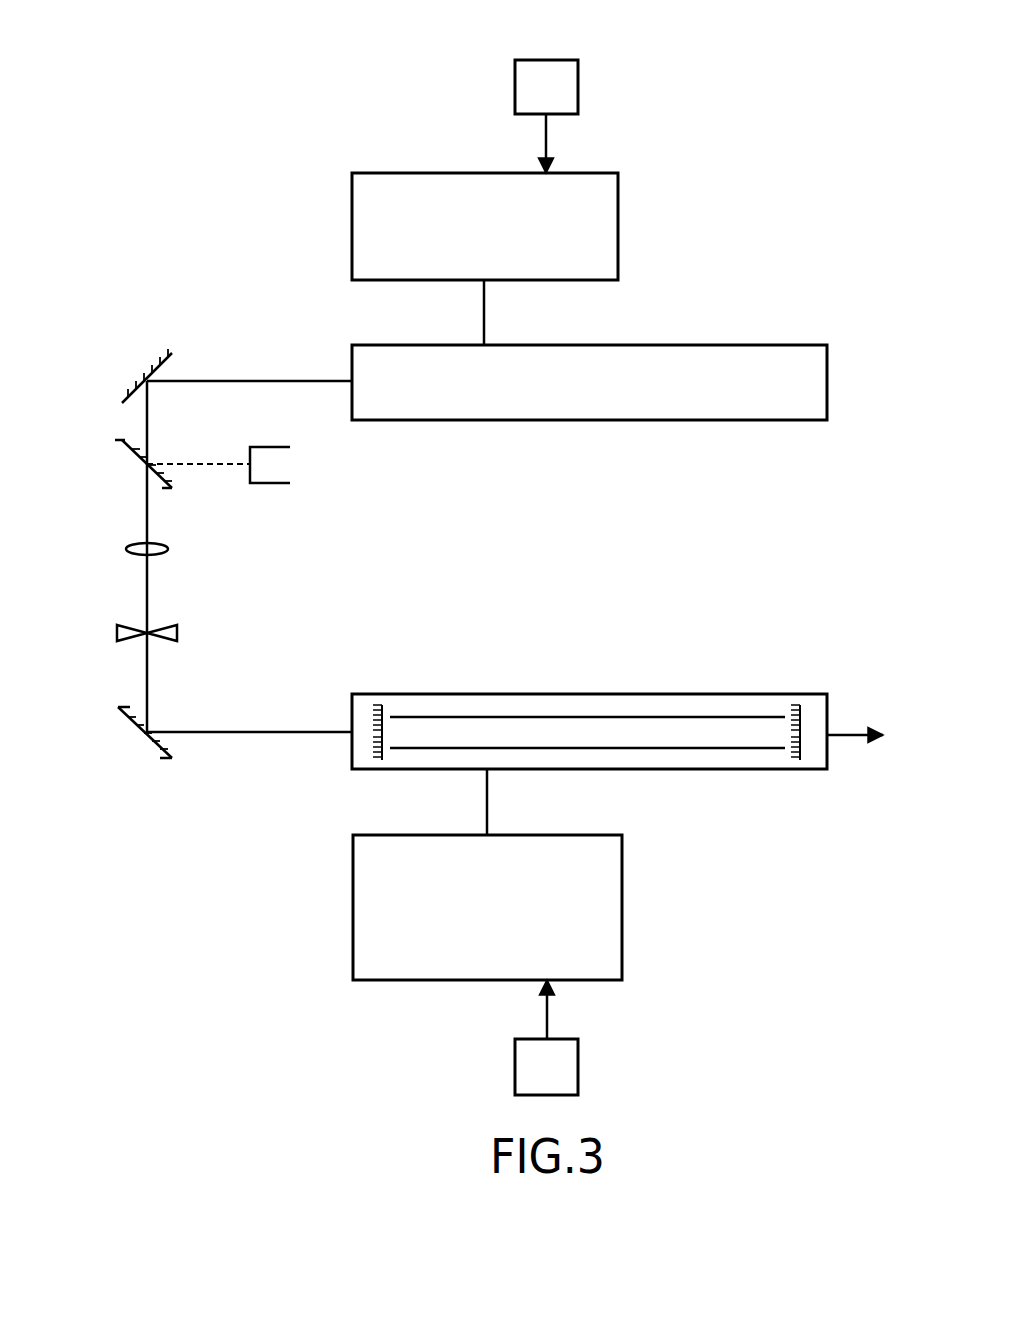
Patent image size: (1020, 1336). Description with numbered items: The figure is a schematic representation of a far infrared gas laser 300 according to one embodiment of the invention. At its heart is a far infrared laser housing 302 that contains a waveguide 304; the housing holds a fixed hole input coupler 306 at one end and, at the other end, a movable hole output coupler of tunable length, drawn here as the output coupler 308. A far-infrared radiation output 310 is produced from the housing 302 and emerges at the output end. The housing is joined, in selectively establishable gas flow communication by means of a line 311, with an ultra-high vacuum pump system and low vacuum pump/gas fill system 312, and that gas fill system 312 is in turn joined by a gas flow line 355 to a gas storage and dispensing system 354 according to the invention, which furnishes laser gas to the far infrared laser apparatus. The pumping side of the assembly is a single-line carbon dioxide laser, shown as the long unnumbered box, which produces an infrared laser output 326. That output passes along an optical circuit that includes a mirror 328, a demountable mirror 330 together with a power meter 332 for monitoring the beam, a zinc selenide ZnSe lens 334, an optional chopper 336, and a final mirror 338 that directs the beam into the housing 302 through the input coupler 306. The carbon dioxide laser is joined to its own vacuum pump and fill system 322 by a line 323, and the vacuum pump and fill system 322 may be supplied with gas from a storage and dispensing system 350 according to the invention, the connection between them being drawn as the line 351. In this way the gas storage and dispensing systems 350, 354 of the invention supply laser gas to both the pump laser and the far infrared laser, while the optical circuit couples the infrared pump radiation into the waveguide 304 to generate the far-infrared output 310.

The far infrared gas laser 300 is at (122, 779).
The far infrared laser housing 302 is at (648, 776).
The waveguide 304 is at (612, 717).
The fixed hole input coupler 306 is at (376, 705).
The second grating / output coupler 308 is at (803, 705).
The far-infrared radiation output 310 is at (843, 737).
The line 311 is at (488, 815).
The ultra-high vacuum pump system and low vacuum pump/gas fill system 312 is at (623, 907).
The vacuum pump and fill system 322 is at (619, 205).
The line 323 is at (485, 302).
The infrared laser output 326 is at (307, 379).
The mirror 328 is at (172, 352).
The demountable mirror 330 is at (124, 443).
The power meter 332 is at (268, 483).
The ZnSe lens 334 is at (132, 555).
The chopper 336 is at (177, 630).
The mirror 338 is at (122, 713).
The storage and dispensing system 350 is at (578, 63).
The signal line 351 is at (547, 128).
The gas storage and dispensing system 354 is at (578, 1067).
The gas flow line 355 is at (548, 1022).